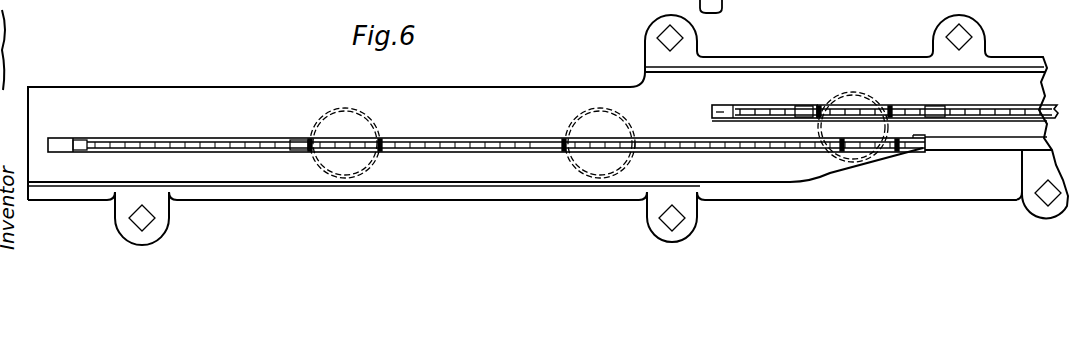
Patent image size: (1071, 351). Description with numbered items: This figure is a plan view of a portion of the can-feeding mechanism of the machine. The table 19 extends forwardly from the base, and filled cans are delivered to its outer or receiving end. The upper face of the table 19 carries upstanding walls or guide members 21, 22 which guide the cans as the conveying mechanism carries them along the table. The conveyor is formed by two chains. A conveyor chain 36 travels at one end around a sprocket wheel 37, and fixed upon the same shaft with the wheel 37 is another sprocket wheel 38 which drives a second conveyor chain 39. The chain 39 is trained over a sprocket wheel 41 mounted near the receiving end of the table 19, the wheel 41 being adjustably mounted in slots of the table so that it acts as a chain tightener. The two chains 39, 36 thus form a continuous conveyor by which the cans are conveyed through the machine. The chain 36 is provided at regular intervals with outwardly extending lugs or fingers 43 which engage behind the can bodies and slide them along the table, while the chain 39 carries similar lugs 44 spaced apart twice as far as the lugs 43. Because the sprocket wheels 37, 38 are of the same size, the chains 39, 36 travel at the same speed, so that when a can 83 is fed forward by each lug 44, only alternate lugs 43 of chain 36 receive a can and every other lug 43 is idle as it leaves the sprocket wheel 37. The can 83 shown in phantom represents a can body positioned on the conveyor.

The table 19 is at (313, 199).
The guide member 21 is at (532, 188).
The guide member 22 is at (768, 70).
The conveyor chain 36 is at (1005, 110).
The sprocket wheel 37 is at (785, 110).
The sprocket wheel 38 is at (838, 146).
The conveyor chain 39 is at (450, 152).
The sprocket wheel 41 is at (143, 140).
The lug 43 is at (933, 112).
The lug 44 is at (78, 143).
The can 83 is at (322, 120).